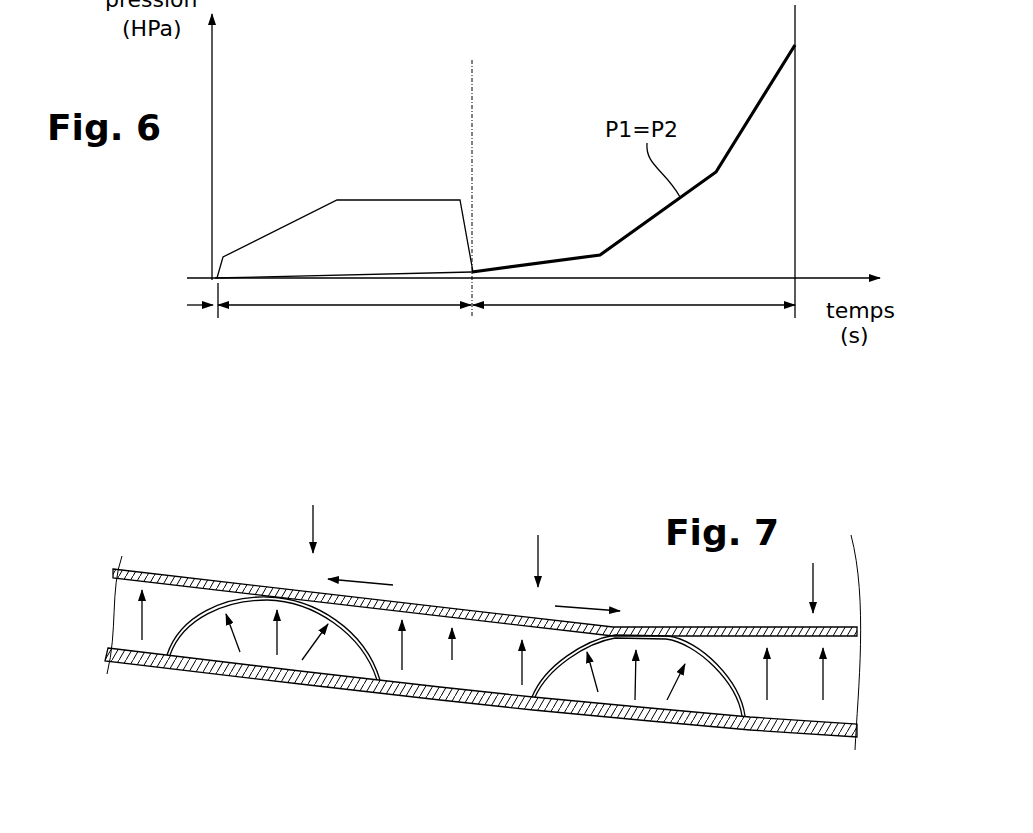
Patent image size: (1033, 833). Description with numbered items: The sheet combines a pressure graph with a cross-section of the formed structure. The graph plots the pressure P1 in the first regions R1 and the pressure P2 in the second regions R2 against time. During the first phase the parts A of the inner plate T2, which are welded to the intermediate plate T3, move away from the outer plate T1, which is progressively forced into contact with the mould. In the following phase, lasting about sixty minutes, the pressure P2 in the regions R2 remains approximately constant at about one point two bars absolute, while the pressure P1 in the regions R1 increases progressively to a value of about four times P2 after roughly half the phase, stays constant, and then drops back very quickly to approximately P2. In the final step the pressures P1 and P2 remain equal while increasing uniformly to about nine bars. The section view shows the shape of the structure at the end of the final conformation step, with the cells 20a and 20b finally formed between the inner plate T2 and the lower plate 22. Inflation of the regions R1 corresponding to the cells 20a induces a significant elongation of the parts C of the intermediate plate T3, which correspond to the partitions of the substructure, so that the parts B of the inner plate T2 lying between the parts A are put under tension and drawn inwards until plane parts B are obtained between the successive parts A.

In FIG. 7, the cells 20a is at (242, 615).
In FIG. 7, the cells 20b is at (508, 638).
In FIG. 7, the lower support plate 22 is at (777, 741).
In FIG. 7, the outer plate T1 is at (240, 675).
In FIG. 7, the inner plate T2 is at (150, 575).
In FIG. 7, the intermediate plate T3 is at (720, 688).
In FIG. 6, the pressure in the first regions P1 is at (277, 230).
In FIG. 7, the pressure in the first regions P1 is at (277, 652).
In FIG. 6, the pressure in the second regions P2 is at (430, 272).
In FIG. 7, the pressure in the second regions P2 is at (140, 628).
In FIG. 7, the first regions R1 is at (323, 658).
In FIG. 7, the second regions R2 is at (467, 678).
In FIG. 7, the parts of the inner plate A is at (283, 590).
In FIG. 7, the parts of the inner plate B is at (453, 610).
In FIG. 7, the parts of the intermediate plate C is at (705, 653).